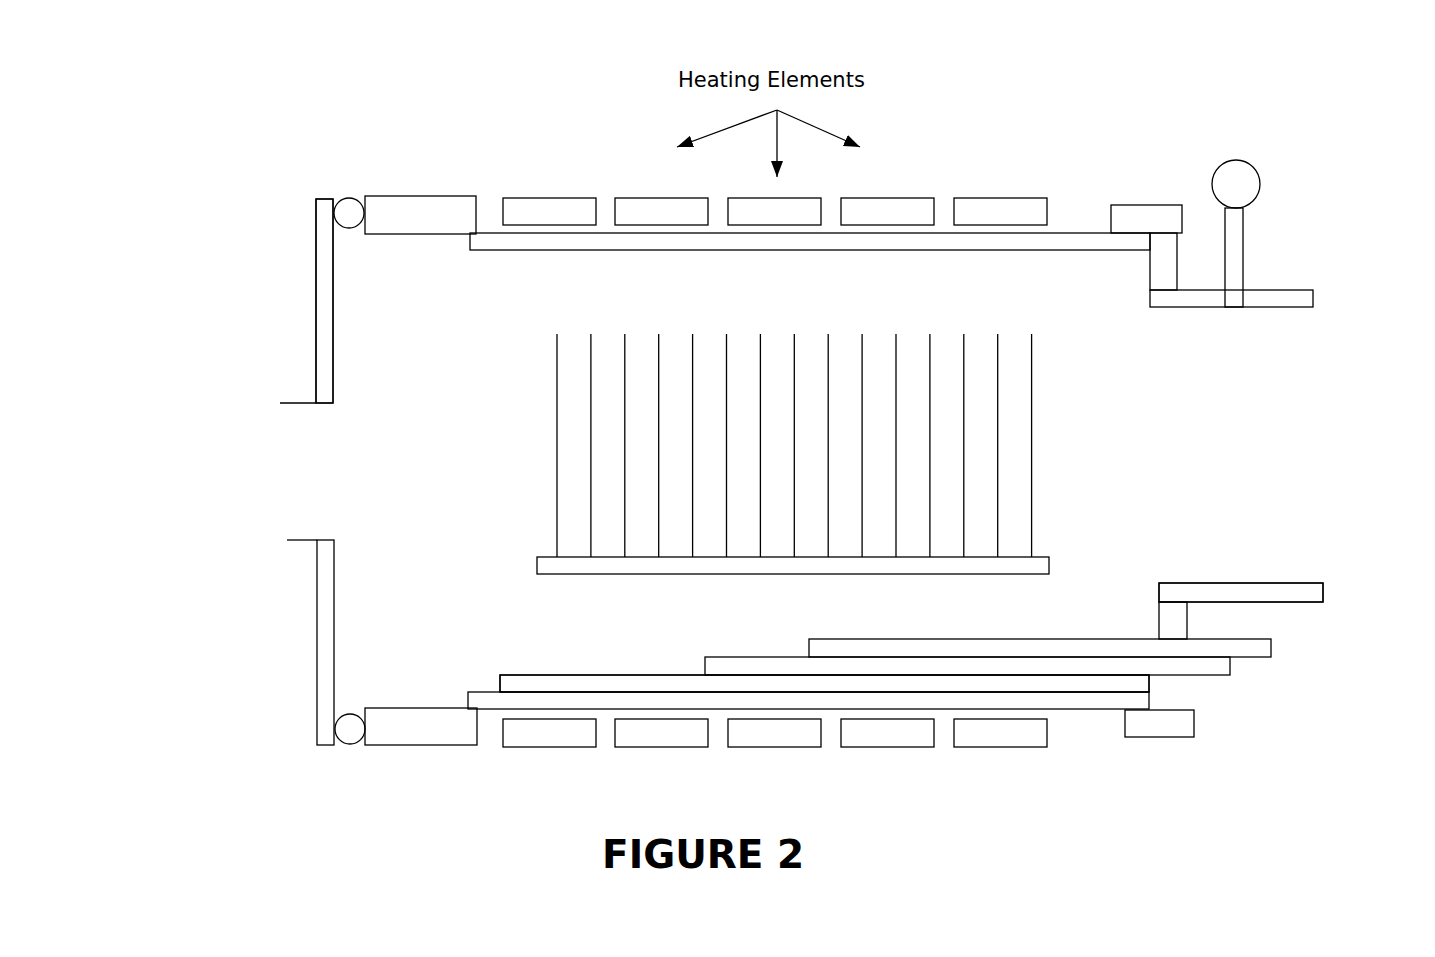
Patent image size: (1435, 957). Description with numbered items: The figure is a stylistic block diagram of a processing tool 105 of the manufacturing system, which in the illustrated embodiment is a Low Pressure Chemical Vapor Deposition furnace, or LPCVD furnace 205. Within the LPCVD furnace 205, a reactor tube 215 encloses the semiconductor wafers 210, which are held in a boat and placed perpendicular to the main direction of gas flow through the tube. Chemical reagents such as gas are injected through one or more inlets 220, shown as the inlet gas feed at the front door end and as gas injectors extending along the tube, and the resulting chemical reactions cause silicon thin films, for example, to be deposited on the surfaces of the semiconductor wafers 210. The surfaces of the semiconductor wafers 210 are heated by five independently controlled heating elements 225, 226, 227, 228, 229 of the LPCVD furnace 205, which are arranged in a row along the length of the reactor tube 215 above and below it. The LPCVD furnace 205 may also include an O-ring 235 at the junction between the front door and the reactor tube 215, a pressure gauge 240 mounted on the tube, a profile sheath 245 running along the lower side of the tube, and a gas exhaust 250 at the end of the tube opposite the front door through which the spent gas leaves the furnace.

The processing tool 105 is at (348, 147).
The LPCVD furnace 205 is at (324, 301).
The semiconductor wafers 210 is at (517, 445).
The reactor tube 215 is at (488, 197).
The inlets 220 is at (1330, 649).
The heating element 225 is at (535, 197).
The heating element 226 is at (647, 197).
The heating element 227 is at (778, 198).
The heating element 228 is at (873, 197).
The heating element 229 is at (986, 197).
The O-ring 235 is at (353, 762).
The pressure gauge 240 is at (1238, 148).
The profile sheath 245 is at (1220, 685).
The gas exhaust 250 is at (1352, 437).